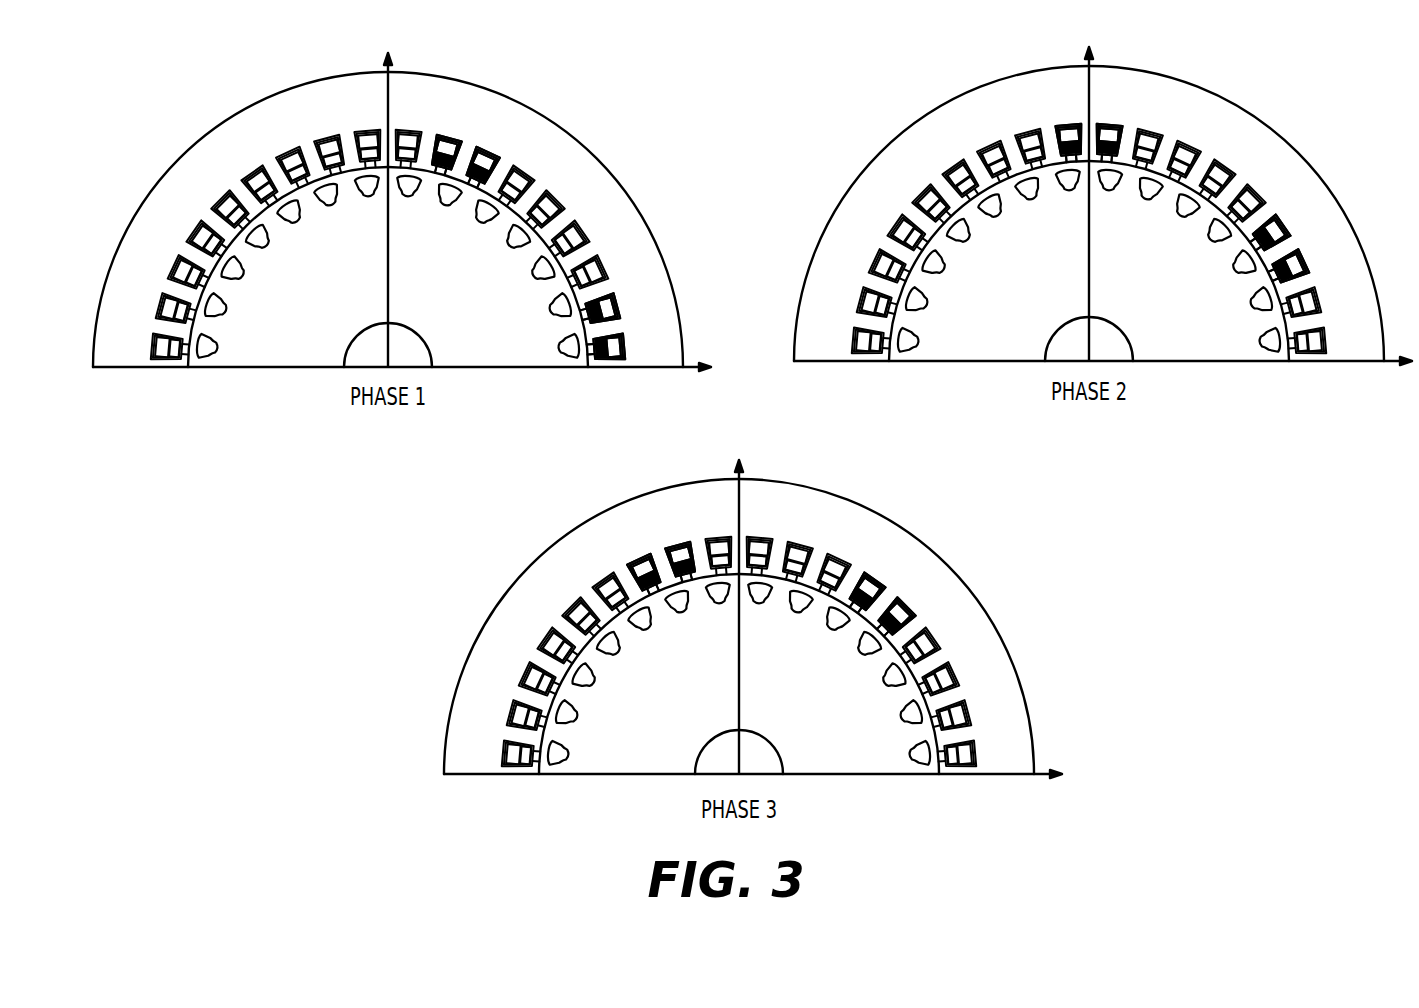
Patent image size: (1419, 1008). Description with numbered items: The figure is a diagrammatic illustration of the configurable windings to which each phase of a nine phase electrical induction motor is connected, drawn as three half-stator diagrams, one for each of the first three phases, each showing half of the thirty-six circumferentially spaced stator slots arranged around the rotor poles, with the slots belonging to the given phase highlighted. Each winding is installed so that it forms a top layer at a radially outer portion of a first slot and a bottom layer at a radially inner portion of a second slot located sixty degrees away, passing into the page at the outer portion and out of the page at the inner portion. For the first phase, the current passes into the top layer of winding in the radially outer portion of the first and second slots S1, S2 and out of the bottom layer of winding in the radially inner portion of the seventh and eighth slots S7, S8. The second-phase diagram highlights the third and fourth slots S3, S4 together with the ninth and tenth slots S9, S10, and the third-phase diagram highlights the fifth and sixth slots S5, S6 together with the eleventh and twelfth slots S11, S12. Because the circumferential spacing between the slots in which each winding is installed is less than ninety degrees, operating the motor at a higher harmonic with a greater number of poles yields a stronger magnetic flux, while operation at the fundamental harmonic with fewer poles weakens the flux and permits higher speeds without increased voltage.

The first slot S1 is at (625, 347).
The second slot S2 is at (618, 305).
The third slot S3 is at (1309, 262).
The fourth slot S4 is at (1288, 224).
The fifth slot S5 is at (909, 602).
The sixth slot S6 is at (871, 574).
The seventh slot S7 is at (492, 166).
The eighth slot S8 is at (458, 152).
The ninth slot S9 is at (1112, 147).
The tenth slot S10 is at (1068, 146).
The eleventh slot S11 is at (672, 560).
The twelfth slot S12 is at (635, 578).